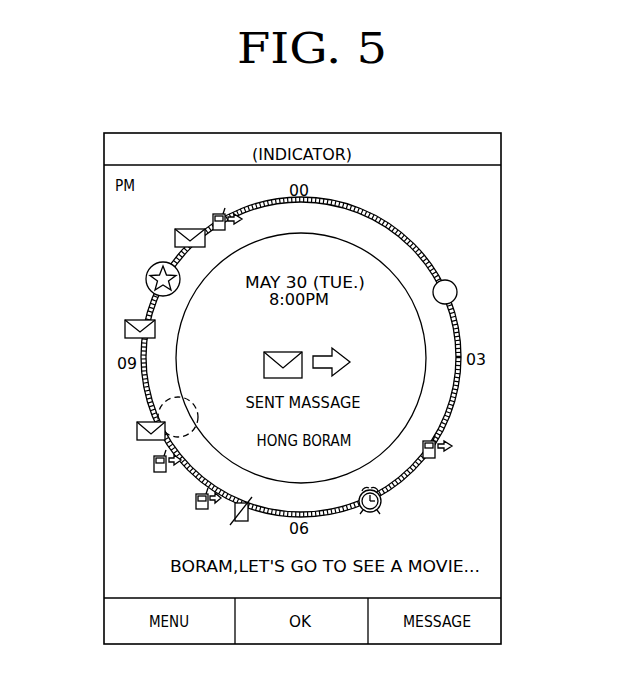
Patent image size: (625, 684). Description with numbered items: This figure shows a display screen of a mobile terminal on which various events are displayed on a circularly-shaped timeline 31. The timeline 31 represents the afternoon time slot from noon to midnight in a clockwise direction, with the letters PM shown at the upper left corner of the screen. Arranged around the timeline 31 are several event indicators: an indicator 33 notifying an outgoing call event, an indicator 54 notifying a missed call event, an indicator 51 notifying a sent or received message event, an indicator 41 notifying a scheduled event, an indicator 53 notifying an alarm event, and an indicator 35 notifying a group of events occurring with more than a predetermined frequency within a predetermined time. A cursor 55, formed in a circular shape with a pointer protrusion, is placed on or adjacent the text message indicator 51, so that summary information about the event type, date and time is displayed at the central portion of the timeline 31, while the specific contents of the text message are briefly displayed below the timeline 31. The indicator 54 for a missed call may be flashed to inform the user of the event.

The circularly-shaped timeline 31 is at (426, 255).
The indicator notifying an outgoing call event 33 is at (440, 456).
The indicator notifying a group of events 35 is at (145, 278).
The indicator notifying a scheduled event 41 is at (457, 290).
The indicator notifying a sent/received message event 51 is at (137, 433).
The indicator notifying an alarm event 53 is at (385, 500).
The indicator notifying a missed call event 54 is at (233, 514).
The cursor or pointer 55 is at (160, 405).